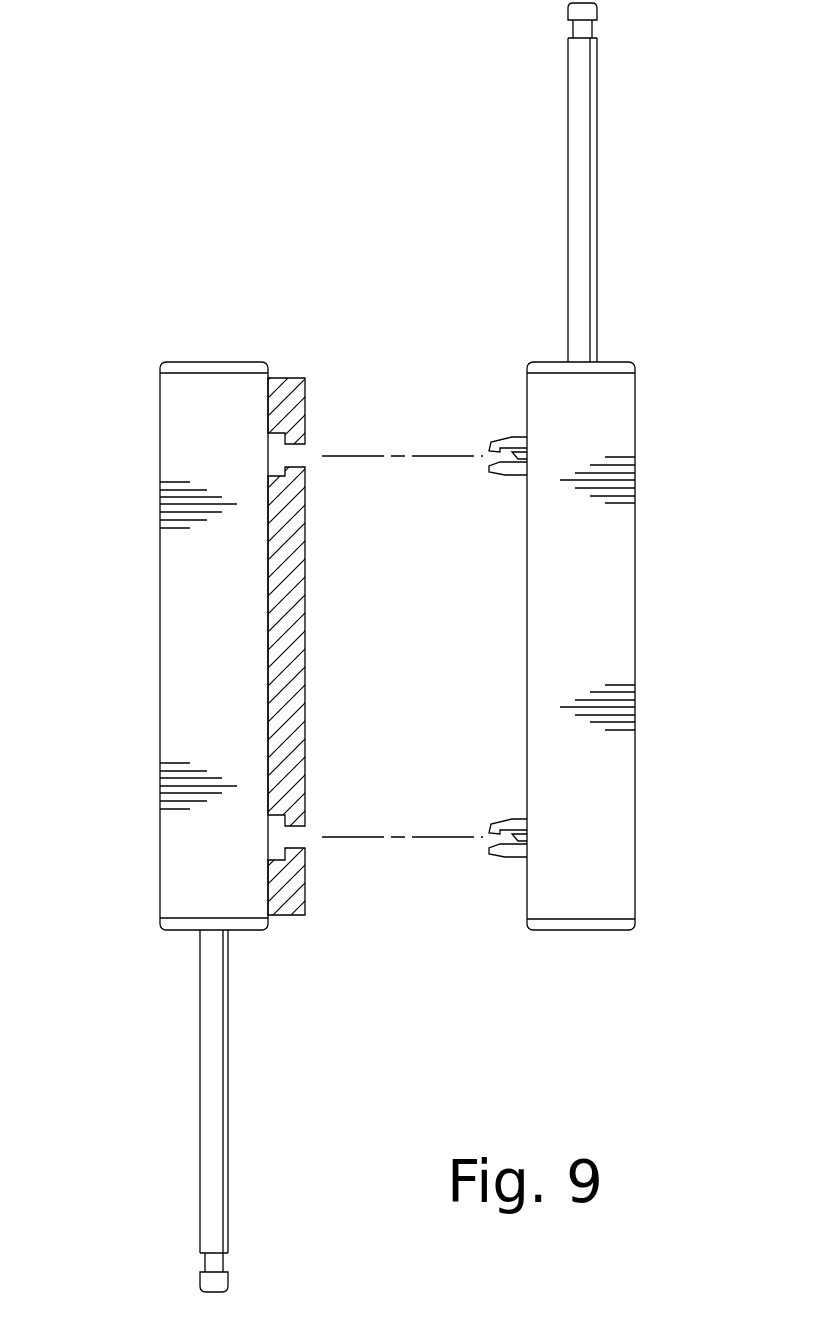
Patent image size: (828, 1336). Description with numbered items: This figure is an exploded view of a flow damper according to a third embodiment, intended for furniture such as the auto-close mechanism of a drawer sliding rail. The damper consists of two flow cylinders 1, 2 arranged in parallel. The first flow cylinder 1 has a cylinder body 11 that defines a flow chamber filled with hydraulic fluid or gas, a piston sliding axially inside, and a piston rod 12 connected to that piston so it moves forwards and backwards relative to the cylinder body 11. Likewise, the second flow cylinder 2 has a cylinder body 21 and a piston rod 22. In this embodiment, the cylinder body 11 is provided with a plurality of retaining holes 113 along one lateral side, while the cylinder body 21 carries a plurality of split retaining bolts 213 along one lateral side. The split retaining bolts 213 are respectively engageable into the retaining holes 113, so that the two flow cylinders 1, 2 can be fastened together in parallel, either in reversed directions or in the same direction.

The first flow cylinder 1 is at (205, 827).
The cylinder body 11 is at (160, 667).
The retaining holes 113 is at (284, 432).
The piston rod 12 is at (201, 1100).
The second flow cylinder 2 is at (611, 466).
The cylinder body 21 is at (635, 563).
The split retaining bolts 213 is at (505, 440).
The piston rod 22 is at (597, 210).